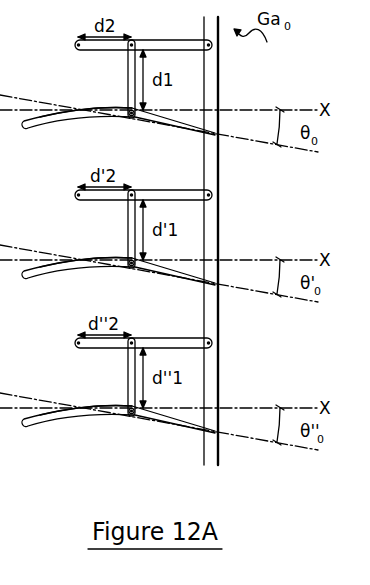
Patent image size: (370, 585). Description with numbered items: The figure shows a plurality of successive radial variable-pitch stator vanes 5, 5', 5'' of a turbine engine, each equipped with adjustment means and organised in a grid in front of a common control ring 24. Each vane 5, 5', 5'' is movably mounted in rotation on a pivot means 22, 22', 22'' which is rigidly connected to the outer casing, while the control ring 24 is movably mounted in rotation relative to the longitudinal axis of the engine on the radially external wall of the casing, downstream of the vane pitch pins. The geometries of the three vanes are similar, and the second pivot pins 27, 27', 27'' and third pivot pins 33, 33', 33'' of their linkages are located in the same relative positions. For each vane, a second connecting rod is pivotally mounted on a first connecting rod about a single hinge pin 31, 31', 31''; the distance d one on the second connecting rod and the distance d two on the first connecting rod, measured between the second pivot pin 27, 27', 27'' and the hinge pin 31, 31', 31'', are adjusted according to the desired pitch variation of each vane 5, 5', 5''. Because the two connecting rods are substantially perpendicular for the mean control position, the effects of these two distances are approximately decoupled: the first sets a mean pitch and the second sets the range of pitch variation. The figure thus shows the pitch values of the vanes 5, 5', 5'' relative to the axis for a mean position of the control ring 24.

The variable-pitch stator vane 5 is at (115, 136).
The variable-pitch stator vane 5' is at (113, 286).
The variable-pitch stator vane 5'' is at (112, 434).
The pivot means 22 is at (86, 96).
The pivot means 22' is at (85, 246).
The pivot means 22'' is at (84, 394).
The control ring 24 is at (218, 82).
The second pivot pin 27 is at (125, 34).
The second pivot pin 27' is at (124, 184).
The second pivot pin 27'' is at (123, 332).
The hinge pin 31 is at (146, 61).
The hinge pin 31' is at (148, 211).
The hinge pin 31'' is at (150, 359).
The third pivot pin 33 is at (110, 93).
The third pivot pin 33' is at (109, 243).
The third pivot pin 33'' is at (109, 391).